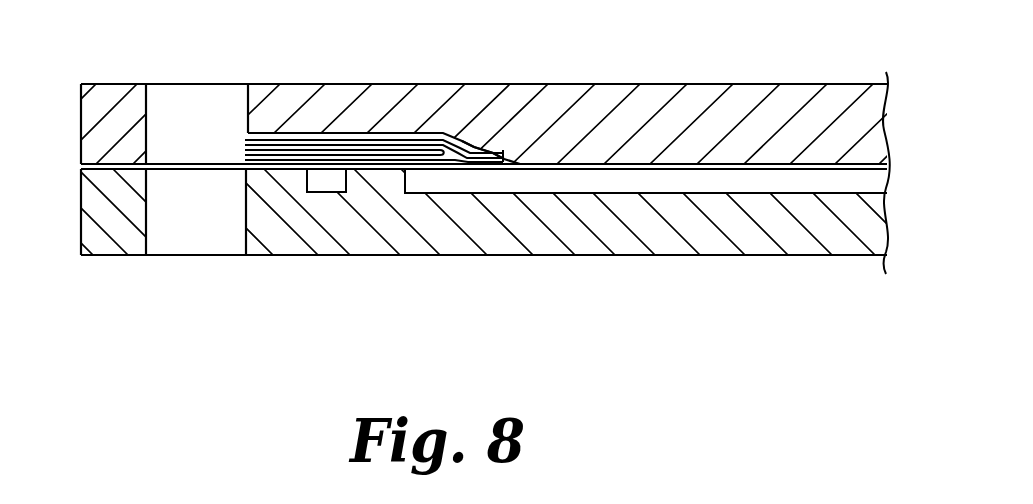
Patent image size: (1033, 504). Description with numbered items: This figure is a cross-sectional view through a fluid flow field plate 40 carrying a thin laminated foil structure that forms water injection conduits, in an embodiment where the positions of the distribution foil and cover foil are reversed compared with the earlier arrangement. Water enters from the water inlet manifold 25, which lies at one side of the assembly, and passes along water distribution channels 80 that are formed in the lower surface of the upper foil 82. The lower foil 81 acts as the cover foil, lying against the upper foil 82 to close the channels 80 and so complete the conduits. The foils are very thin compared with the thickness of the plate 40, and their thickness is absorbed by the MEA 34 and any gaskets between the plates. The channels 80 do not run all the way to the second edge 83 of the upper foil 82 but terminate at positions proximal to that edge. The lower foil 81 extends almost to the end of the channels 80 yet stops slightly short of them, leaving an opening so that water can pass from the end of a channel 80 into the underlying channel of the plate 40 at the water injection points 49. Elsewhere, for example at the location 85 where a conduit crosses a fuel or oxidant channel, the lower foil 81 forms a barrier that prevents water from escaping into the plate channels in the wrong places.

The water inlet manifold 25 is at (174, 100).
The MEA 34 is at (104, 130).
The fluid flow field plate 40 is at (90, 231).
The water injection points 49 is at (458, 164).
The water distribution channels 80 is at (248, 150).
The lower foil 81 is at (244, 163).
The upper foil 82 is at (247, 142).
The second edge 83 is at (510, 158).
The location 85 is at (330, 178).